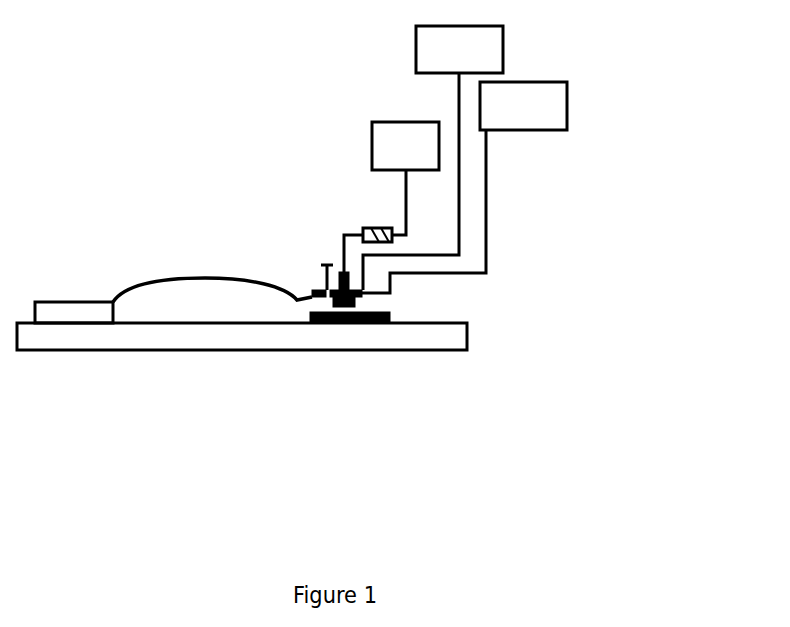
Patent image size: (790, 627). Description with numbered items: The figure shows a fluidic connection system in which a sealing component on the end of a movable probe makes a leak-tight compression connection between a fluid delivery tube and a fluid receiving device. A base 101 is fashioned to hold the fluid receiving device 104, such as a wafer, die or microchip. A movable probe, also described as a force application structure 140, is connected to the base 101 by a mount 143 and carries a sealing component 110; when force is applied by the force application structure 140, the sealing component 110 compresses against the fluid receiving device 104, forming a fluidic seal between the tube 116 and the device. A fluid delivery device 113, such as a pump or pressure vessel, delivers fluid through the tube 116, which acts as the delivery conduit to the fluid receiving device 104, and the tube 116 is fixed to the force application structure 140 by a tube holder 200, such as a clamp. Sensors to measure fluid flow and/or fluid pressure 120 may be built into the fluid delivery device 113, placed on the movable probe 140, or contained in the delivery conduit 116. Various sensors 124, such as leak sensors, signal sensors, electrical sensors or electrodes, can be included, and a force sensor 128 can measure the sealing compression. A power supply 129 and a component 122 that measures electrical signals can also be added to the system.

The base 101 is at (326, 332).
The fluid receiving device 104 is at (438, 305).
The sealing component 110 is at (506, 280).
The fluid delivery device 113 is at (338, 129).
The tube 116 is at (510, 189).
The sensors to measure fluid flow and/or fluid pressure 120 is at (332, 209).
The component that measures electrical signals 122 is at (373, 154).
The sensors 124 is at (249, 201).
The force sensor 128 is at (277, 255).
The power supply 129 is at (552, 170).
The movable probe 140 is at (209, 225).
The mount 143 is at (64, 256).
The tube holder 200 is at (471, 245).